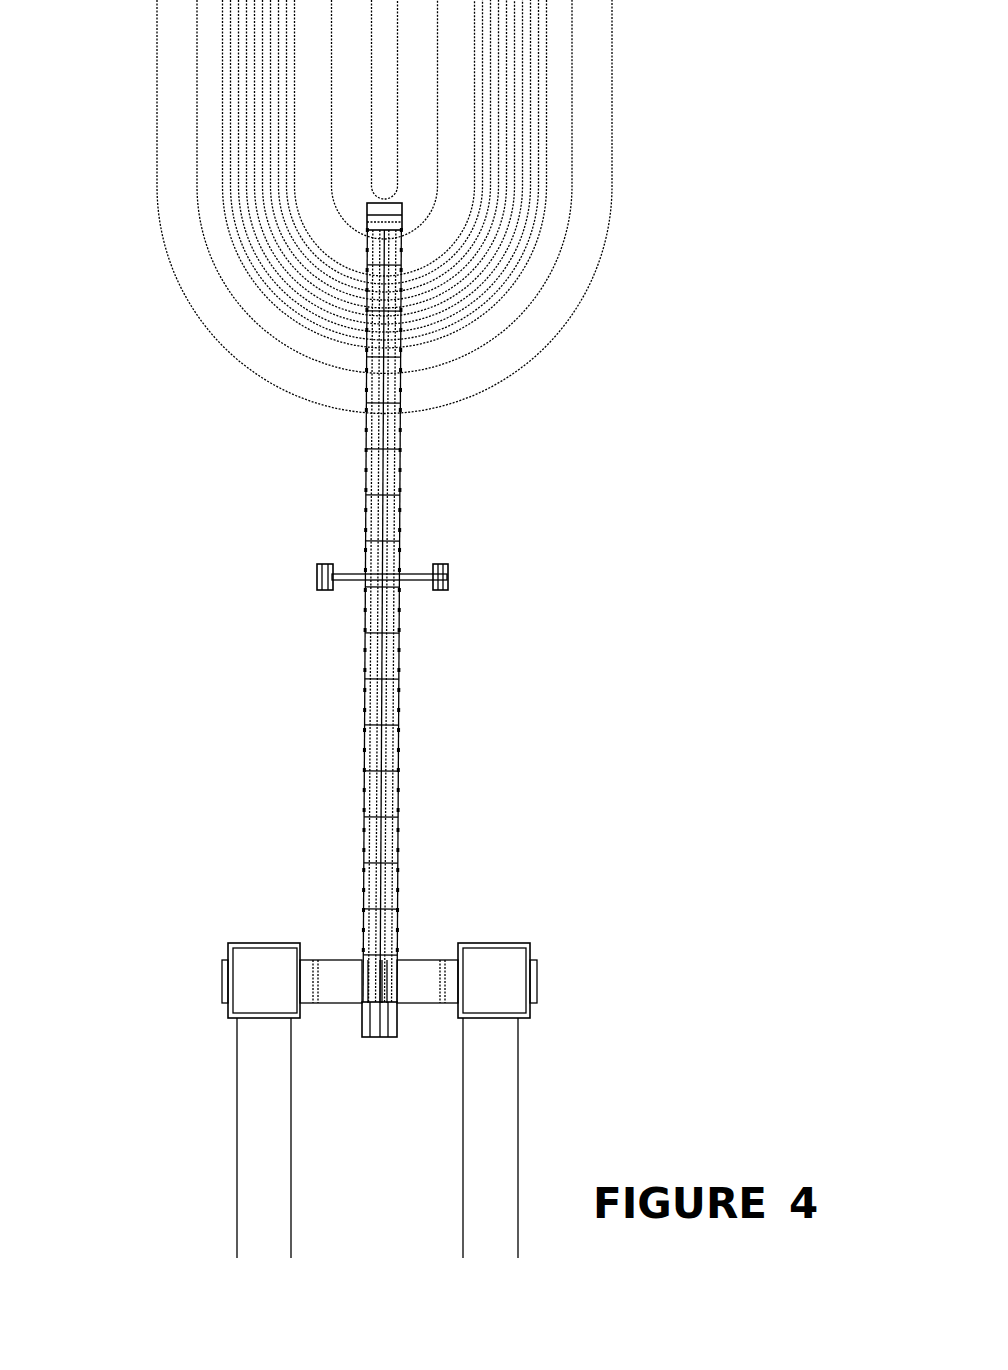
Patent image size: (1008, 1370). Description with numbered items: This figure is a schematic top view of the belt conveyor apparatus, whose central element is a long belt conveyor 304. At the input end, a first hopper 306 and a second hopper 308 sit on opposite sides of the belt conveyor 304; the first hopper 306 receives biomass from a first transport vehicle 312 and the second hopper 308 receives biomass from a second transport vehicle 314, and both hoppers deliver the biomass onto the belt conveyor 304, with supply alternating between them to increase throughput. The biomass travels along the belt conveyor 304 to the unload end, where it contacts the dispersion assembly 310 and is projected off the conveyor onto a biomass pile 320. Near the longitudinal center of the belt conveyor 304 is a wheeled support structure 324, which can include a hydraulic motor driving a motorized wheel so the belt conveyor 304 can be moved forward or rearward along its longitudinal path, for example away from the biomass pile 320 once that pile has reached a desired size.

The belt conveyor 304 is at (380, 555).
The first hopper 306 is at (247, 941).
The second hopper 308 is at (505, 941).
The dispersion assembly 310 is at (412, 220).
The first transport vehicle 312 is at (263, 1068).
The second transport vehicle 314 is at (495, 1070).
The biomass pile 320 is at (578, 183).
The wheeled support structure 324 is at (456, 558).